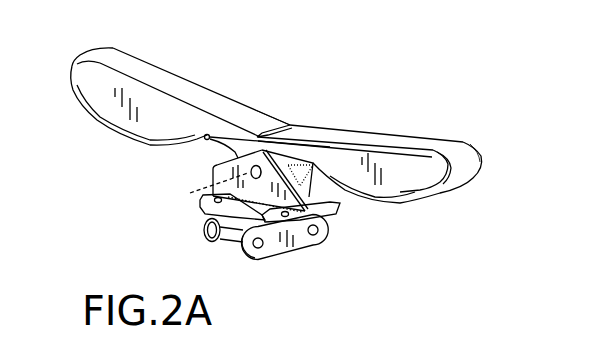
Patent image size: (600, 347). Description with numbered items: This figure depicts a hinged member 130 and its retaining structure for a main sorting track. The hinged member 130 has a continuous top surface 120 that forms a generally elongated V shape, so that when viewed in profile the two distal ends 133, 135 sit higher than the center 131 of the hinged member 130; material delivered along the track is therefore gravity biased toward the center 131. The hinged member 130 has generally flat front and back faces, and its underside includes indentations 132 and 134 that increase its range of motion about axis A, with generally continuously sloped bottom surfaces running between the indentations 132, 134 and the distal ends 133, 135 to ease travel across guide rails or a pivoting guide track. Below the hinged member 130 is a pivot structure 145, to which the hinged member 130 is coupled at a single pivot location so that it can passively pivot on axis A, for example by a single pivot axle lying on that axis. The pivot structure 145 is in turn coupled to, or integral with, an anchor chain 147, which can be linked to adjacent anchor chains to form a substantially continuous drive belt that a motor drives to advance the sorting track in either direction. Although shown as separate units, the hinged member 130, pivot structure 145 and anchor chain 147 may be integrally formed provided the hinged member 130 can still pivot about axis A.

The top surface 120 is at (435, 140).
The hinged member 130 is at (417, 185).
The center 131 is at (288, 125).
The indentation 132 is at (314, 174).
The distal end 133 is at (476, 159).
The indentation 134 is at (205, 137).
The distal end 135 is at (72, 63).
The pivot structure 145 is at (215, 177).
The anchor chain 147 is at (275, 248).